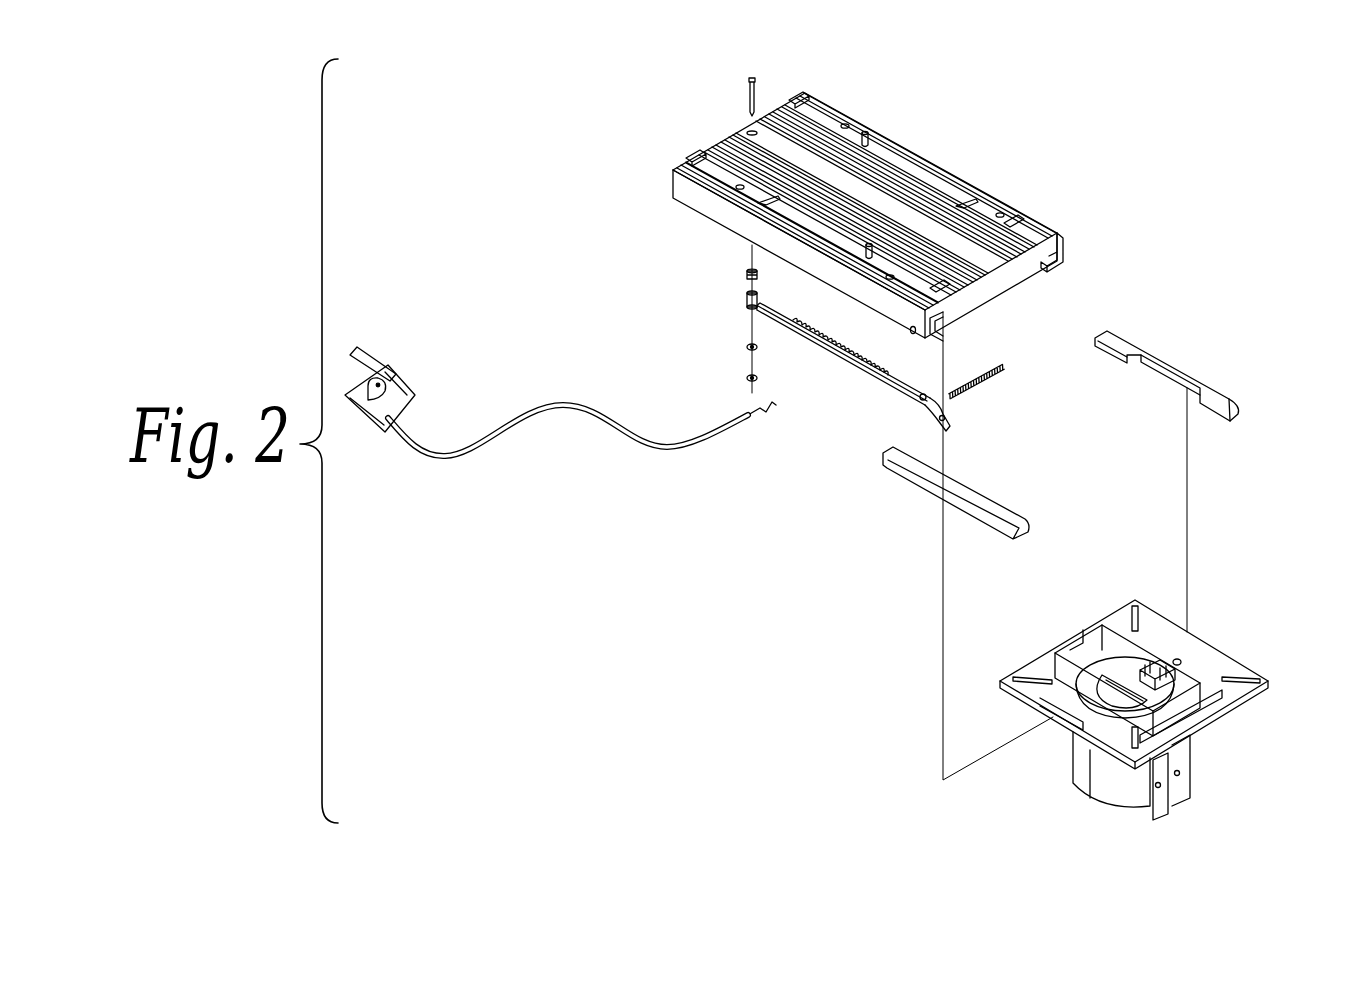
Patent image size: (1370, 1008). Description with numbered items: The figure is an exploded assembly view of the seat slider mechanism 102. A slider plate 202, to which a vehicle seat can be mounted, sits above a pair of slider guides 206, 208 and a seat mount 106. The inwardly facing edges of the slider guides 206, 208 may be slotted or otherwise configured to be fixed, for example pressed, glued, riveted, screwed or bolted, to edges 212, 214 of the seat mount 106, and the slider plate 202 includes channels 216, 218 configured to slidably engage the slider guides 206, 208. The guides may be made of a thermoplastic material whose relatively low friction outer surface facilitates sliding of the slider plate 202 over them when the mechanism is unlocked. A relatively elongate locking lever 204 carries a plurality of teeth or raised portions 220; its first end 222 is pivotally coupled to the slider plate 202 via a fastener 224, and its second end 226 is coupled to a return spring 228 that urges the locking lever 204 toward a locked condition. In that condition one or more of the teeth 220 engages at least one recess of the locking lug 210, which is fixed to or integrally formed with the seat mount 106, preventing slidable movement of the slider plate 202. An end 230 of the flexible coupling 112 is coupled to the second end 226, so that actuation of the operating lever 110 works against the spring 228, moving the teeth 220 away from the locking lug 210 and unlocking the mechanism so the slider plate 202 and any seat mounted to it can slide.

The seat slider mechanism 102 is at (1232, 229).
The seat mount 106 is at (1148, 675).
The operating lever or member 110 is at (407, 373).
The flexible coupling 112 is at (672, 452).
The slider plate 202 is at (893, 140).
The locking lever or member 204 is at (887, 367).
The slider guide or guide member 206 is at (900, 478).
The slider guide or guide member 208 is at (1150, 352).
The locking lug or member 210 is at (1160, 665).
The edge of seat mount 212 is at (1155, 628).
The edge of seat mount 214 is at (1014, 695).
The channel 216 is at (944, 330).
The channel 218 is at (1063, 258).
The teeth or raised portions 220 is at (755, 412).
The first end of locking lever 222 is at (745, 300).
The fastener 224 is at (745, 95).
The second end of locking lever 226 is at (950, 425).
The return spring 228 is at (1003, 366).
The end of flexible coupling 230 is at (760, 404).